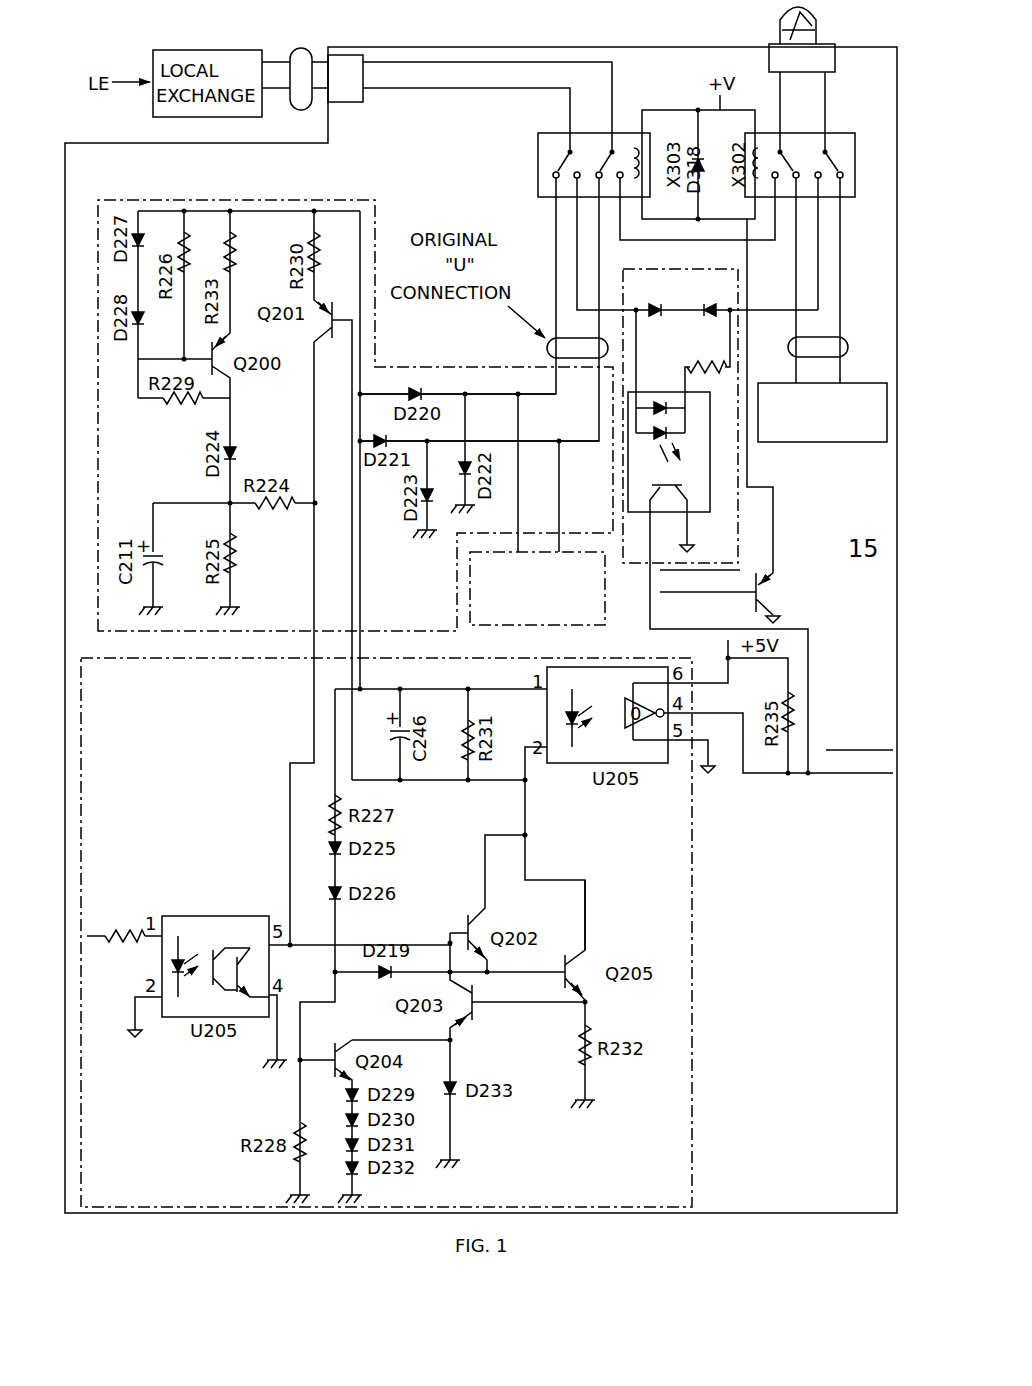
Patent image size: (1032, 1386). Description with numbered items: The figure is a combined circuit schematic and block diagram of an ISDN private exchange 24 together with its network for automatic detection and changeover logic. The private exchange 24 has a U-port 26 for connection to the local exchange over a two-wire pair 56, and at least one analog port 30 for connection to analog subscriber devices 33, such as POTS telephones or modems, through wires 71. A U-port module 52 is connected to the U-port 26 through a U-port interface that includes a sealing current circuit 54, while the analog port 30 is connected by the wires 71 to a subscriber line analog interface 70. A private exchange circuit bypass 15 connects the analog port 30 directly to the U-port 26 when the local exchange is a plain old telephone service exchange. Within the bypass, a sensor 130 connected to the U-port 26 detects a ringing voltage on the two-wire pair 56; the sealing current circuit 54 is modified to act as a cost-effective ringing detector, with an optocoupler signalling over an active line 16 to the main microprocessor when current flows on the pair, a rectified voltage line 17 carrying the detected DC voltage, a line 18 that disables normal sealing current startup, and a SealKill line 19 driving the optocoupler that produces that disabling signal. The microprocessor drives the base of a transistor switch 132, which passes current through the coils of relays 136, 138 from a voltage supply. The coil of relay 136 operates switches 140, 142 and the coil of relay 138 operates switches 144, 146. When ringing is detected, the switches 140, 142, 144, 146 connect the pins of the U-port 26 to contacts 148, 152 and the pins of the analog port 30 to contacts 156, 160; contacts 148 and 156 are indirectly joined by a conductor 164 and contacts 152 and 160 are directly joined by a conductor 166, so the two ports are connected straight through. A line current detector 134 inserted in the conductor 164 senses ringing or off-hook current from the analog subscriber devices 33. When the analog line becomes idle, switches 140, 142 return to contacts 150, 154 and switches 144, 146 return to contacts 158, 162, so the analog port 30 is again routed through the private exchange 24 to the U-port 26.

The private exchange circuit bypass 15 is at (863, 549).
The active line 16 is at (825, 778).
The rectified voltage line 17 is at (364, 578).
The line 18 is at (311, 578).
The SealKill line 19 is at (97, 930).
The private exchange 24 is at (70, 160).
The U-port 26 is at (348, 106).
The analog port 30 is at (766, 62).
The analog subscriber devices 33 is at (822, 25).
The U-port module 52 is at (640, 607).
The sealing current circuit 54 is at (284, 197).
The two-wire pair 56 is at (288, 110).
The subscriber line analog interface 70 is at (822, 446).
The wires 71 is at (851, 336).
The sensor 130 is at (696, 1000).
The transistor switch 132 is at (742, 609).
The line current detector 134 is at (650, 267).
The relay 136 is at (534, 162).
The relay 138 is at (838, 130).
The switch 140 is at (478, 120).
The switch 142 is at (499, 107).
The switch 144 is at (770, 112).
The switch 146 is at (816, 112).
The contact 148 is at (697, 244).
The contact 150 is at (468, 286).
The contact 152 is at (697, 212).
The contact 154 is at (489, 309).
The contact 156 is at (827, 244).
The contact 158 is at (849, 280).
The contact 160 is at (784, 229).
The contact 162 is at (805, 280).
The conductor 164 is at (758, 316).
The conductor 166 is at (758, 246).